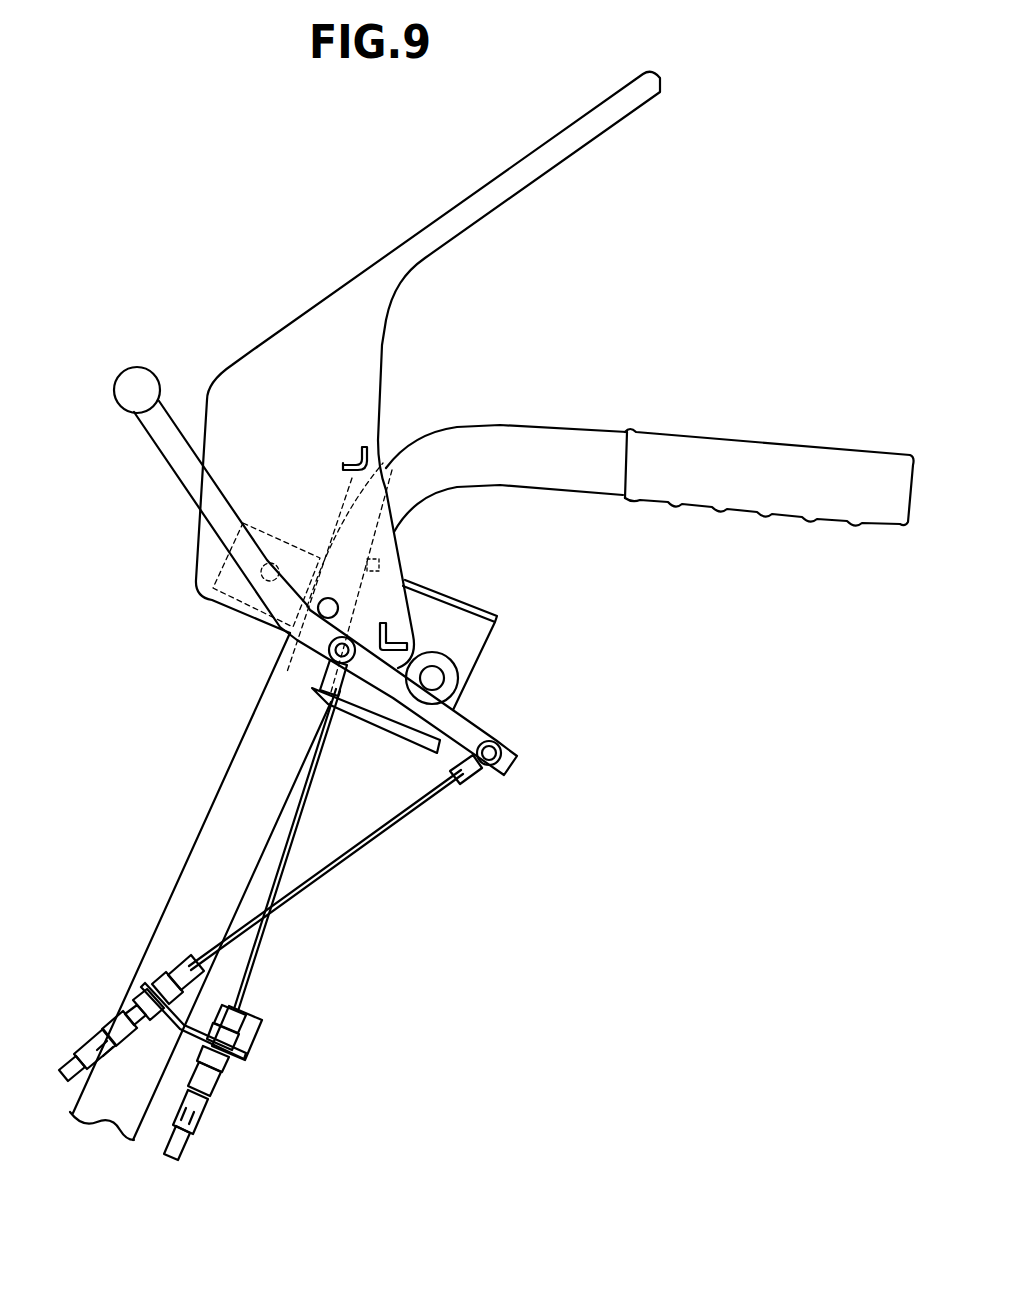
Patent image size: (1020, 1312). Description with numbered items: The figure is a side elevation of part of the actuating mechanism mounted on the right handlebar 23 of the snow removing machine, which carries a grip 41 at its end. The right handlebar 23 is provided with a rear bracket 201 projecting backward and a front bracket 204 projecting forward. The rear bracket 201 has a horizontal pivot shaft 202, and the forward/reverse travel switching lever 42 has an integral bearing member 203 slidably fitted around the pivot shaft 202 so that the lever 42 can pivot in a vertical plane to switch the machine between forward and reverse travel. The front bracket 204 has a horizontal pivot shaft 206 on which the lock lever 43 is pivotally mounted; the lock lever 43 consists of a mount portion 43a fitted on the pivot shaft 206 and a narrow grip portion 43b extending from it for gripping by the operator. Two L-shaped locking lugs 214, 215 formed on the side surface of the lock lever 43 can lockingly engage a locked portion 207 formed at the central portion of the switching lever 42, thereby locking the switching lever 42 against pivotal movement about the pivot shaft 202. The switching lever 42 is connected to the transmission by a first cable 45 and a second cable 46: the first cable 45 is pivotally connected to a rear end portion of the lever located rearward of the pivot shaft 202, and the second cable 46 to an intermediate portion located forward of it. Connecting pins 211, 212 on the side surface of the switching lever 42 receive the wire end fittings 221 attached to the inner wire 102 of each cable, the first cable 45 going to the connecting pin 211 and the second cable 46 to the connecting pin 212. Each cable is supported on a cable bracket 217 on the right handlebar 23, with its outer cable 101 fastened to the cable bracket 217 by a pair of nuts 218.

The right handlebar 23 is at (222, 820).
The grip 41 is at (778, 455).
The forward/reverse travel switching lever 42 is at (162, 438).
The lock lever 43 is at (426, 363).
The mount portion 43a is at (255, 378).
The grip portion 43b is at (548, 150).
The first cable 45 is at (375, 845).
The second cable 46 is at (302, 778).
The outer cable 101 is at (80, 1063).
The inner wire 102 is at (269, 849).
The rear bracket 201 is at (472, 630).
The pivot shaft 202 is at (437, 678).
The bearing member 203 is at (447, 692).
The front bracket 204 is at (218, 573).
The pivot shaft 206 is at (262, 578).
The locked portion 207 is at (337, 605).
The connecting pin 211 is at (496, 752).
The connecting pin 212 is at (332, 648).
The locking lug 214 is at (402, 640).
The locking lug 215 is at (367, 447).
The cable bracket 217 is at (247, 1033).
The nuts 218 is at (160, 985).
The wire end fitting 221 is at (327, 677).